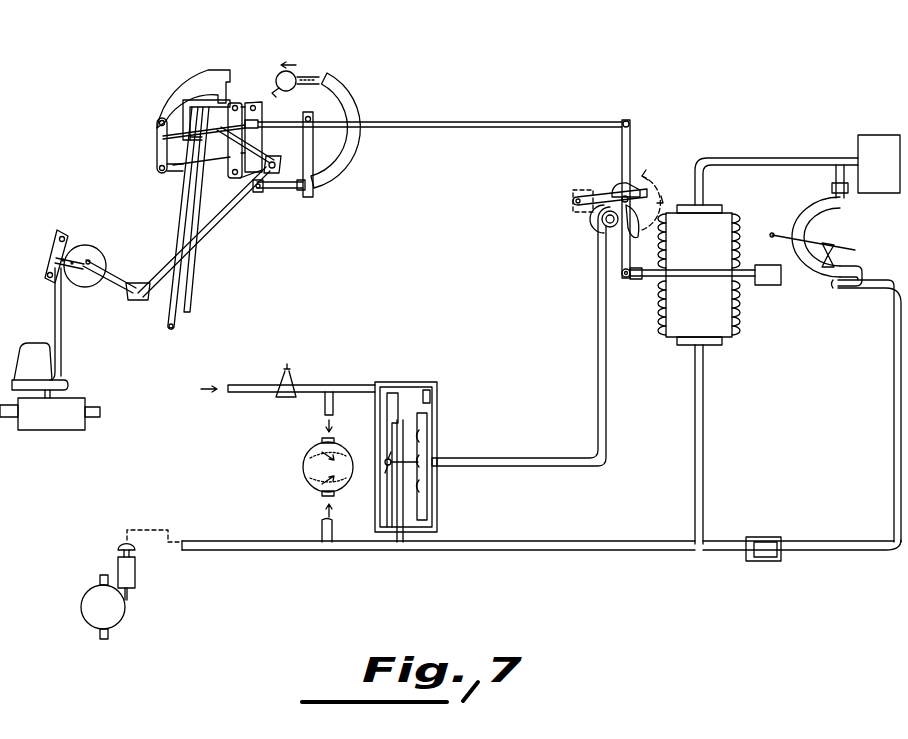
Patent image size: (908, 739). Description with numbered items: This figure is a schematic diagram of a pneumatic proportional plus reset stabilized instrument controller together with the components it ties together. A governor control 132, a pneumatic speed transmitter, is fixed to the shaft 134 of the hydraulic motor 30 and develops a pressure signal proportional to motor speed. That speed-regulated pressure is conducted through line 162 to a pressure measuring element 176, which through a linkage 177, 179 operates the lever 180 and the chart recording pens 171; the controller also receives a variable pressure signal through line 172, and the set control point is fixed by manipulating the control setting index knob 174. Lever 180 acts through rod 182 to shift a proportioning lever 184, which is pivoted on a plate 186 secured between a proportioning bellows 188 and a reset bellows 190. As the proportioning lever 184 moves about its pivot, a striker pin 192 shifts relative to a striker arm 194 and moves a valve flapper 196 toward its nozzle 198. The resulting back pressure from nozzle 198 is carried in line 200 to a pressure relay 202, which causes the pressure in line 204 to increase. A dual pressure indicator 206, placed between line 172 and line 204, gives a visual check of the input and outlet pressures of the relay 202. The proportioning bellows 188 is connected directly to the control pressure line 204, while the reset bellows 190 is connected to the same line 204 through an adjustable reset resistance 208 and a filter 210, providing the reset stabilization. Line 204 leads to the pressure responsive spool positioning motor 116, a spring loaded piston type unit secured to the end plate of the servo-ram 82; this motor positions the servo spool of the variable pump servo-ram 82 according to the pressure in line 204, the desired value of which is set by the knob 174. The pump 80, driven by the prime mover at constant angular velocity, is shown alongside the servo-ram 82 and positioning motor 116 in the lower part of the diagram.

The hydraulic motor 30 is at (60, 423).
The pump 80 is at (82, 593).
The servo-ram 82 is at (132, 576).
The pressure responsive spool positioning motor 116 is at (117, 538).
The governor control 132 is at (34, 346).
The shaft of hydraulic motor 134 is at (70, 393).
The line 162 is at (61, 334).
The pens 171 is at (184, 316).
The line 172 is at (250, 385).
The control setting index knob 174 is at (291, 72).
The pressure measuring element 176 is at (85, 245).
The linkage 177 is at (113, 282).
The linkage 179 is at (256, 150).
The lever 180 is at (196, 82).
The rod 182 is at (383, 120).
The proportioning lever 184 is at (633, 139).
The plate 186 is at (655, 280).
The proportioning bellows 188 is at (738, 322).
The reset bellows 190 is at (733, 226).
The striker pin 192 is at (637, 238).
The striker arm 194 is at (591, 222).
The valve flapper 196 is at (597, 189).
The nozzle 198 is at (213, 229).
The line 200 is at (598, 402).
The pressure relay 202 is at (438, 509).
The line 204 is at (294, 552).
The dual pressure indicator 206 is at (303, 467).
The adjustable reset resistance 208 is at (812, 278).
The filter 210 is at (765, 537).